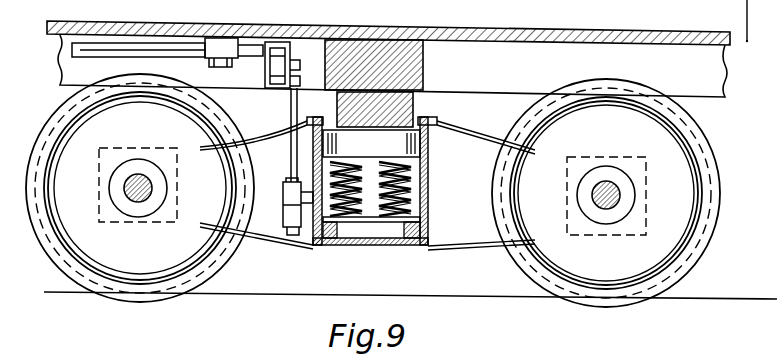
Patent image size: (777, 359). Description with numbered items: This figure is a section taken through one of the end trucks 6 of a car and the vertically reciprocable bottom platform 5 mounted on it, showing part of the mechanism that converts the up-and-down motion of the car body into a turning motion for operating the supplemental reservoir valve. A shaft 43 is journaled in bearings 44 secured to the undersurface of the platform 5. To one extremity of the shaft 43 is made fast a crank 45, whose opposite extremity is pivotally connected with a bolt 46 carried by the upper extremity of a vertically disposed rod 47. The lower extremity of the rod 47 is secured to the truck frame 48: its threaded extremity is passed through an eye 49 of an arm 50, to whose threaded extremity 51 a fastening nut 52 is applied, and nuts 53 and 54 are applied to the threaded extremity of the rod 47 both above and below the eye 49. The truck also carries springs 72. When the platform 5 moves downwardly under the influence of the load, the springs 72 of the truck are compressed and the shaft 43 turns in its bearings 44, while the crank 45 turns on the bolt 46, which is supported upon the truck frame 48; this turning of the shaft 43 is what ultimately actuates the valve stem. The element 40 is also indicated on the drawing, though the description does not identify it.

The bottom platform 5 is at (388, 22).
The lever 40 is at (714, 21).
The shaft 43 is at (104, 56).
The bearing 44 is at (216, 66).
The crank 45 is at (282, 88).
The bolt 46 is at (268, 88).
The vertically disposed rod 47 is at (290, 160).
The truck frame 48 is at (386, 181).
The eye 49 is at (268, 232).
The arm 50 is at (307, 206).
The threaded extremity 51 is at (343, 210).
The fastening nut 52 is at (326, 222).
The nut 53 is at (283, 184).
The nut 54 is at (292, 236).
The end truck 6 is at (398, 83).
The spring 72 is at (388, 214).